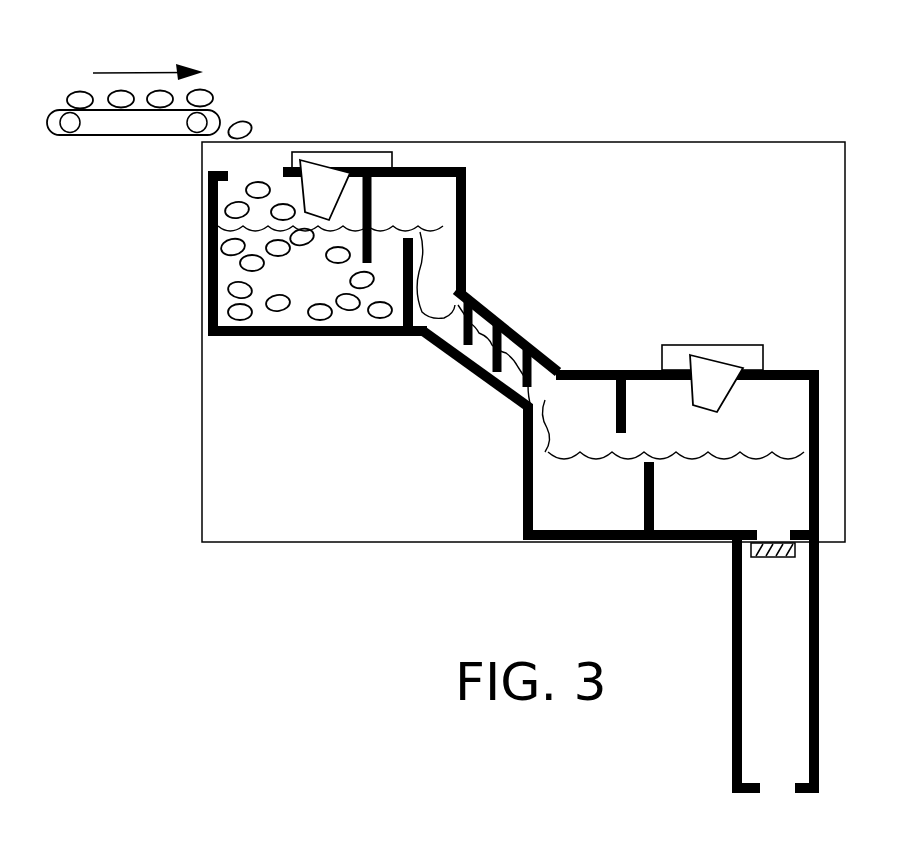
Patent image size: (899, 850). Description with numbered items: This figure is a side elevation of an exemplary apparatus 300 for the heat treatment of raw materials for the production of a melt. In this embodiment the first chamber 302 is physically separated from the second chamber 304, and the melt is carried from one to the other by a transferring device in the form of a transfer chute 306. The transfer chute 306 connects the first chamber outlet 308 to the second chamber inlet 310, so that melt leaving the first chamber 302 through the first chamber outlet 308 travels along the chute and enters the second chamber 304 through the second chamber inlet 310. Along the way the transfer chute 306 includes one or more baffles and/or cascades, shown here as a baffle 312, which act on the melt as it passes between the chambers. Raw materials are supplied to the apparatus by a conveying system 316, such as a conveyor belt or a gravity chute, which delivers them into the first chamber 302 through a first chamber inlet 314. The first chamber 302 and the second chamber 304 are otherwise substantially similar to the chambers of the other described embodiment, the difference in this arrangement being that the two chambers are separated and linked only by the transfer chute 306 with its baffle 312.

The apparatus 300 is at (165, 353).
The first chamber 302 is at (323, 291).
The second chamber 304 is at (752, 445).
The transfer chute 306 is at (503, 328).
The first chamber outlet 308 is at (426, 335).
The second chamber inlet 310 is at (568, 390).
The baffle 312 is at (403, 273).
The first chamber inlet 314 is at (270, 150).
The conveying system 316 is at (99, 156).